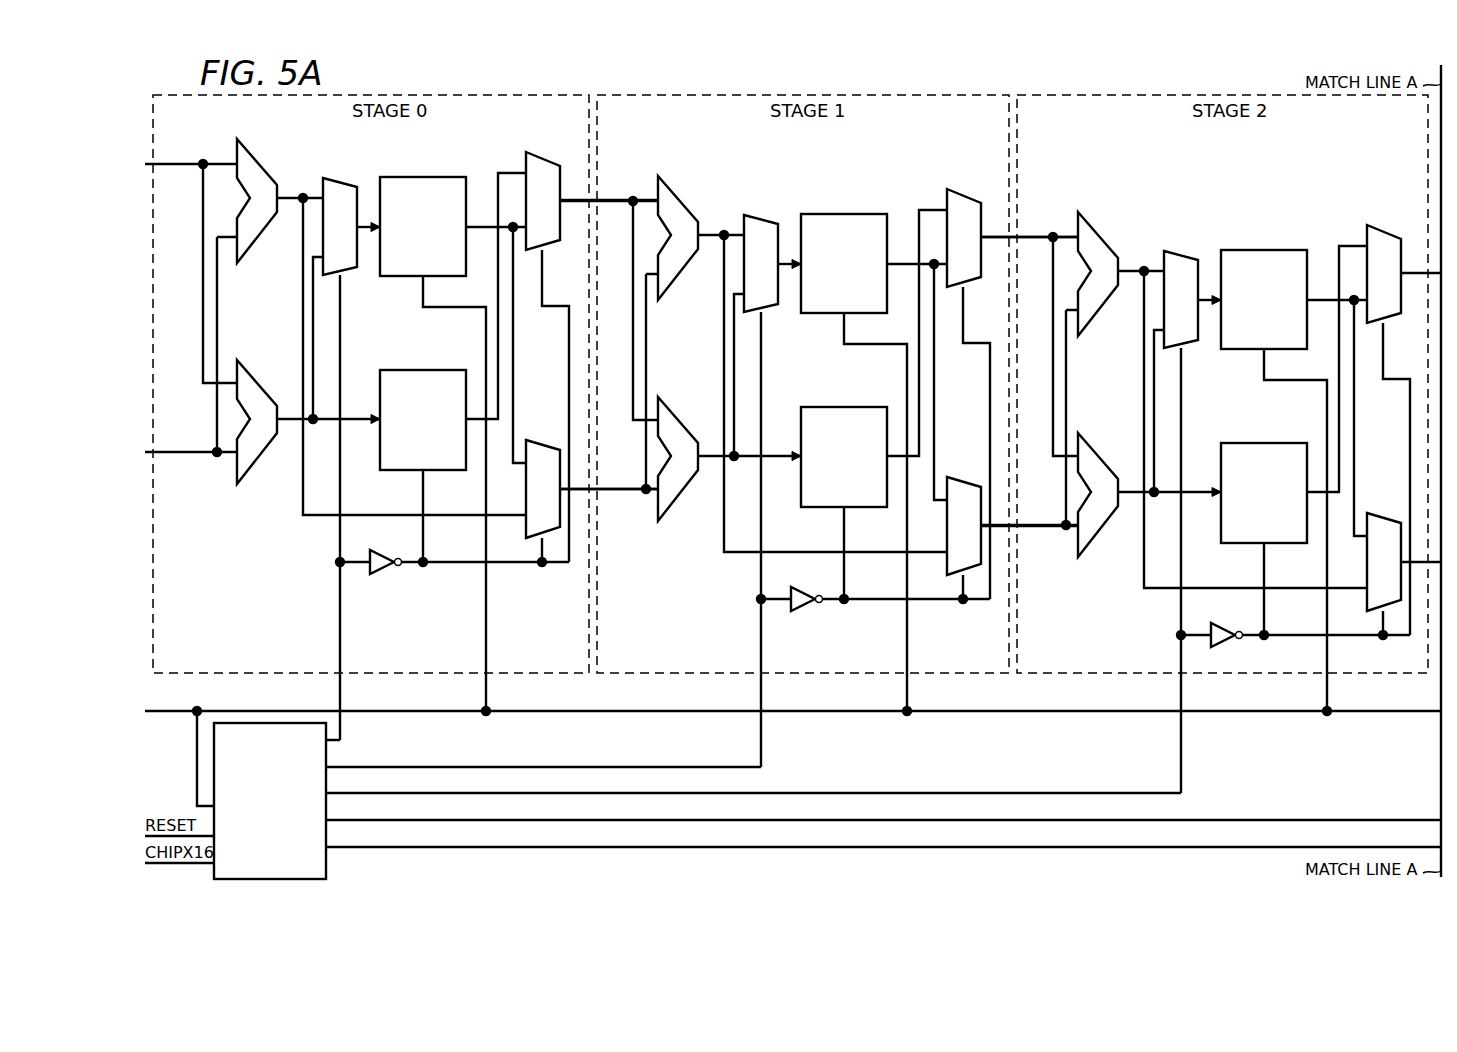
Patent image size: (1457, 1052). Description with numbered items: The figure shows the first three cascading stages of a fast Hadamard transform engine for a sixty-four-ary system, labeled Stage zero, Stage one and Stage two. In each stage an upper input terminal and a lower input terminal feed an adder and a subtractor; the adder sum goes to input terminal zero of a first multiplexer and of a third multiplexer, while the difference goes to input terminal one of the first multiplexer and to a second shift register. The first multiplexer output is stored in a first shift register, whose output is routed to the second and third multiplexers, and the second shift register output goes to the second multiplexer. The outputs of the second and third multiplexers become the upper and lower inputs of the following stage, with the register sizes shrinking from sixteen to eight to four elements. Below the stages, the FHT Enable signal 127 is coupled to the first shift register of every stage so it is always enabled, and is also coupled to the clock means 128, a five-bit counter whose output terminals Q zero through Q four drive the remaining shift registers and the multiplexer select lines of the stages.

The FHT Enable signal 127 is at (793, 744).
The clock means 128 is at (328, 874).